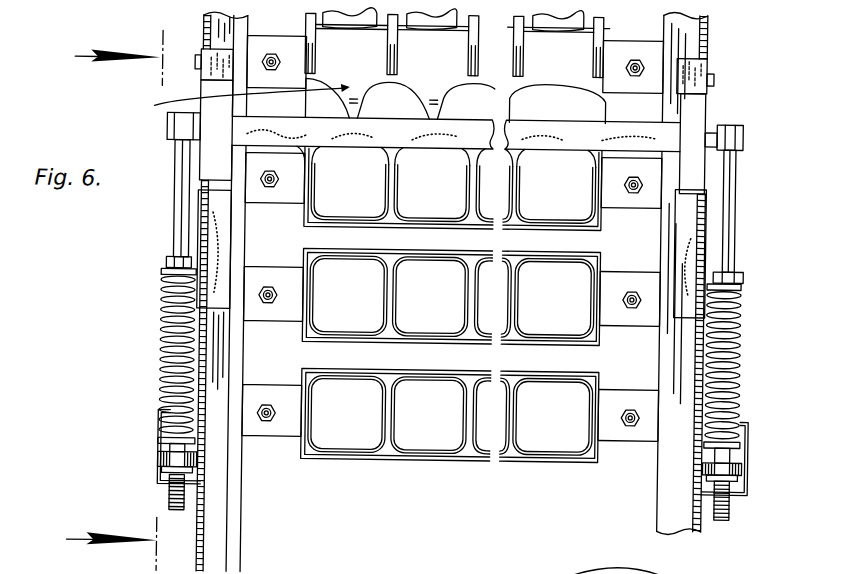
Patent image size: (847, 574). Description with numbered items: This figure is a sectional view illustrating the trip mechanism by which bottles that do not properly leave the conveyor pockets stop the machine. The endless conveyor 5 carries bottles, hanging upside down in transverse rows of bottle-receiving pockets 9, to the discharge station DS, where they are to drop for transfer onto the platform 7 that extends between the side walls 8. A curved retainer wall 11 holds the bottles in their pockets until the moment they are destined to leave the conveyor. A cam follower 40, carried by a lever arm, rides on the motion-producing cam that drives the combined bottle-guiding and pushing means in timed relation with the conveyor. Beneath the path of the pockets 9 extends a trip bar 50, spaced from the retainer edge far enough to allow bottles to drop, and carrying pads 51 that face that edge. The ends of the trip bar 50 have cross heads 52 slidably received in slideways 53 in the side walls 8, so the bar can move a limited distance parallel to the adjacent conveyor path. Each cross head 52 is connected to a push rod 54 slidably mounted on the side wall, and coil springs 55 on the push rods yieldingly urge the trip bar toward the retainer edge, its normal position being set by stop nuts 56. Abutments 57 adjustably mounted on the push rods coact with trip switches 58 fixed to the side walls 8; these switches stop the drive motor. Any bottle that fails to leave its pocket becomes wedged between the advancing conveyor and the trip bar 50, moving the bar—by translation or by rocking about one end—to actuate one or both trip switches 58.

The endless conveyor 5 is at (381, 490).
The platform 7 is at (128, 300).
The side walls 8 is at (208, 548).
The bottle-receiving pockets 9 is at (412, 213).
The curved retainer wall 11 is at (323, 33).
The cam follower 40 is at (340, 38).
The trip bar 50 is at (424, 149).
The pads 51 is at (317, 85).
The cross heads 52 is at (208, 155).
The slideways 53 is at (206, 239).
The push rod 54 is at (175, 216).
The coil springs 55 is at (163, 367).
The stop nuts 56 is at (159, 449).
The abutments 57 is at (160, 462).
The trip switches 58 is at (162, 474).
The discharge station DS is at (235, 99).